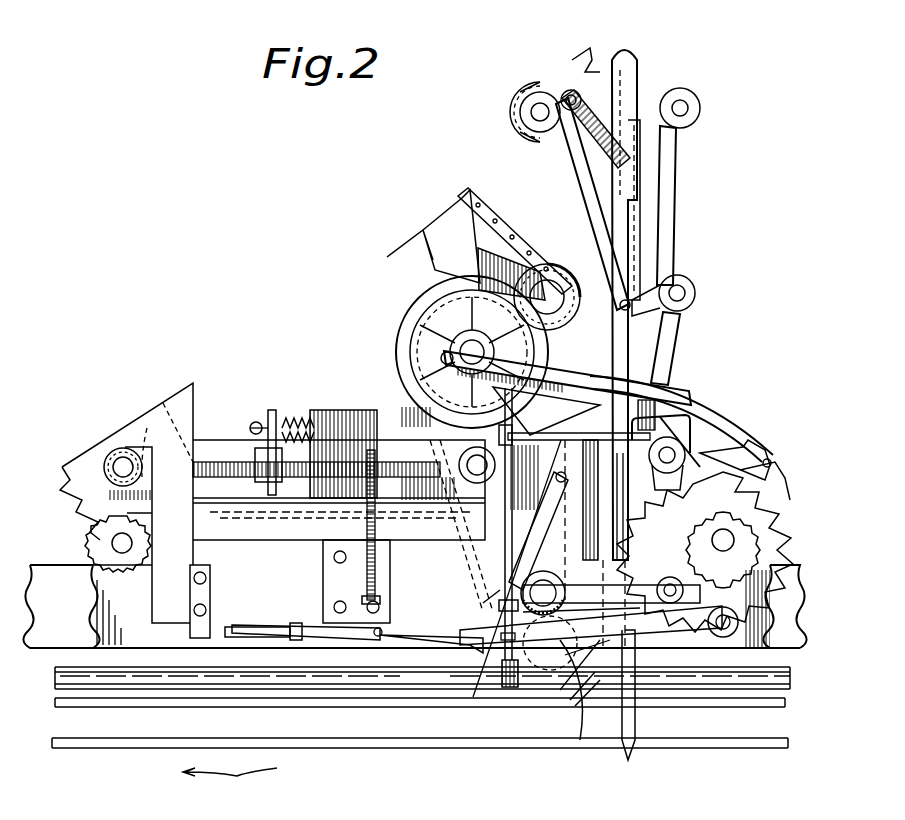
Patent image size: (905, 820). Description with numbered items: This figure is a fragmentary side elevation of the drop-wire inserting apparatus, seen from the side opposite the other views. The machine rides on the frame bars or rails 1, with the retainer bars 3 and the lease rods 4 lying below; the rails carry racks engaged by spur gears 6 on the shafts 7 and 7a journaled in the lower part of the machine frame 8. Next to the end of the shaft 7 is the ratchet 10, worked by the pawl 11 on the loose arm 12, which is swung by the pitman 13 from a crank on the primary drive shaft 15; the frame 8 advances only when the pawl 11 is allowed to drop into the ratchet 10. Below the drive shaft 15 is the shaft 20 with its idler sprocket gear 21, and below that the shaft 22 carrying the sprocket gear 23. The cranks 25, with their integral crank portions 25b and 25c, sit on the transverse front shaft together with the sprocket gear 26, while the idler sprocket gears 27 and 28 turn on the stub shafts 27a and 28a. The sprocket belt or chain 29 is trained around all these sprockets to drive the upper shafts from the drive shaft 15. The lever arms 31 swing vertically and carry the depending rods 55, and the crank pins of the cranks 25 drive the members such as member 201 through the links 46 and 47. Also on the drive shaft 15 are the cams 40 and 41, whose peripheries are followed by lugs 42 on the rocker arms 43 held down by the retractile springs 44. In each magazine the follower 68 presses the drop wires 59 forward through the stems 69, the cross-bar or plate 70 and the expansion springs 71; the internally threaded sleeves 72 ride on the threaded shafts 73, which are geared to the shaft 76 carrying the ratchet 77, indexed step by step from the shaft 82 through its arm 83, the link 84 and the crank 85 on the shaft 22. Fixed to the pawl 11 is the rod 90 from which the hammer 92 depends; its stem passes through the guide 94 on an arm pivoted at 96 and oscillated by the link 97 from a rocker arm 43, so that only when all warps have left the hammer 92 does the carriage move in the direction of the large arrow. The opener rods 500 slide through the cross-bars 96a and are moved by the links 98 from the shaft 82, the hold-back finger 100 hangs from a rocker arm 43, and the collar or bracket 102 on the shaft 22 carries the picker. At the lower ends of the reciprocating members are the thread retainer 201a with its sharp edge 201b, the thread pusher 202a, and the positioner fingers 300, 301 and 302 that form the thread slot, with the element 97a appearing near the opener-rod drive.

The frame bars or rails 1 is at (52, 640).
The bars 3 is at (336, 706).
The lease rods 4 is at (300, 688).
The spur gears 6 is at (145, 548).
The shaft 7 is at (728, 535).
The shaft 7a is at (108, 543).
The machine frame 8 is at (448, 220).
The ratchet 10 is at (775, 528).
The pawl 11 is at (740, 455).
The arm 12 is at (770, 484).
The pitman 13 is at (715, 400).
The primary drive shaft 15 is at (450, 345).
The shaft 20 is at (478, 468).
The idler sprocket gear 21 is at (478, 447).
The shaft 22 is at (500, 578).
The sprocket gear 23 is at (548, 565).
The cranks 25 is at (645, 75).
The crank portion 25b is at (690, 100).
The crank portion 25c is at (600, 150).
The sprocket gear 26 is at (655, 98).
The idler sprocket gear 27 is at (518, 112).
The stub shaft 27a is at (540, 108).
The idler sprocket gear 28 is at (550, 290).
The stub shaft 28a is at (540, 270).
The sprocket belt or chain 29 is at (482, 200).
The lever arms 31 is at (690, 138).
The cam 40 is at (545, 355).
The cam 41 is at (400, 330).
The lugs 42 is at (548, 438).
The rocker arms 43 is at (395, 430).
The retractile springs 44 is at (365, 526).
The link 46 is at (660, 198).
The link 47 is at (655, 222).
The rods 55 is at (680, 160).
The drop wires 59 is at (345, 408).
The follower 68 is at (318, 410).
The stems 69 is at (264, 420).
The cross-bar or plate 70 is at (272, 410).
The expansion springs 71 is at (296, 418).
The internally threaded sleeves 72 is at (258, 450).
The threaded shafts 73 is at (222, 458).
The shaft 76 is at (122, 455).
The ratchet 77 is at (78, 477).
The shaft 82 is at (680, 448).
The arm 83 is at (630, 495).
The link 84 is at (660, 582).
The crank 85 is at (497, 604).
The rod 90 is at (670, 416).
The hammer 92 is at (462, 650).
The guide 94 is at (474, 700).
The pivot 96 is at (490, 568).
The cross-bars 96a is at (296, 622).
The link 97 is at (494, 612).
The link 97a is at (366, 640).
The links 98 is at (404, 618).
The hold-back finger 100 is at (520, 690).
The collar or bracket 102 is at (560, 735).
The member 201 is at (640, 342).
The thread retainer 201a is at (636, 720).
The sharp edge 201b is at (638, 755).
The thread pusher 202a is at (580, 702).
The finger 300 is at (640, 648).
The finger 301 is at (598, 655).
The finger 302 is at (590, 630).
The opener rods 500 is at (258, 627).